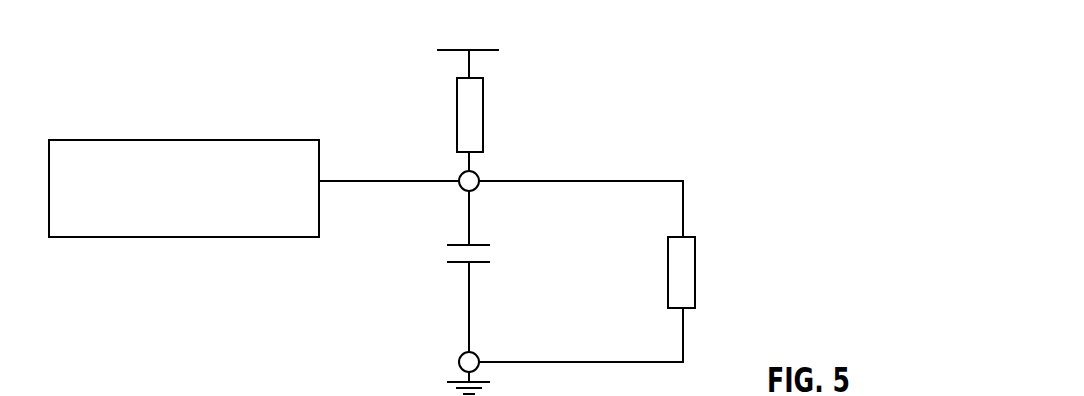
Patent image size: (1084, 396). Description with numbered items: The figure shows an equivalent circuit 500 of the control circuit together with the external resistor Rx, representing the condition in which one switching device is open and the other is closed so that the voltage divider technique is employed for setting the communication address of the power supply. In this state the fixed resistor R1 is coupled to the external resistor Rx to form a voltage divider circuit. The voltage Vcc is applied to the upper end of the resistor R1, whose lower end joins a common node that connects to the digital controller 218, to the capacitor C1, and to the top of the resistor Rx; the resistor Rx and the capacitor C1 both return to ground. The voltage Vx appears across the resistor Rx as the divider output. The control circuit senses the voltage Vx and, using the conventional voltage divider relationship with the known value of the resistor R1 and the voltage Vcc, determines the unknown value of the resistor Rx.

The equivalent circuit 500 is at (127, 60).
The digital controller 218 is at (117, 140).
The resistor R1 is at (490, 104).
The capacitor C1 is at (492, 262).
The resistor Rx is at (704, 263).
The voltage Vcc is at (468, 33).
The voltage Vx is at (632, 271).